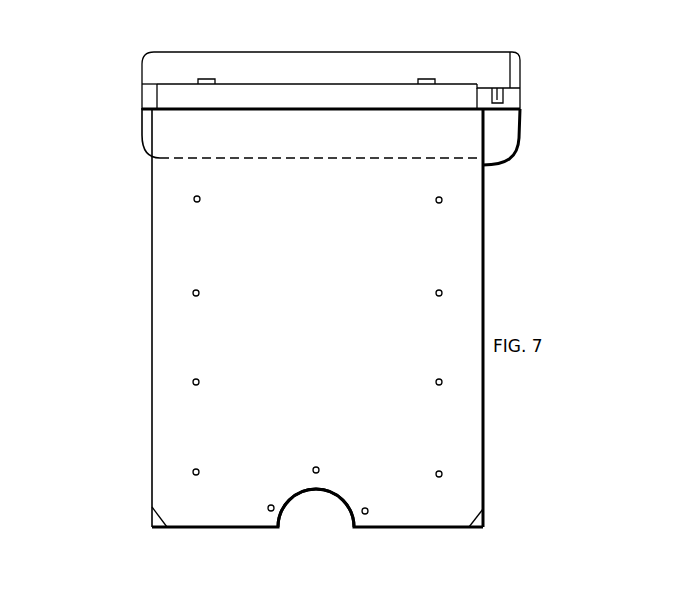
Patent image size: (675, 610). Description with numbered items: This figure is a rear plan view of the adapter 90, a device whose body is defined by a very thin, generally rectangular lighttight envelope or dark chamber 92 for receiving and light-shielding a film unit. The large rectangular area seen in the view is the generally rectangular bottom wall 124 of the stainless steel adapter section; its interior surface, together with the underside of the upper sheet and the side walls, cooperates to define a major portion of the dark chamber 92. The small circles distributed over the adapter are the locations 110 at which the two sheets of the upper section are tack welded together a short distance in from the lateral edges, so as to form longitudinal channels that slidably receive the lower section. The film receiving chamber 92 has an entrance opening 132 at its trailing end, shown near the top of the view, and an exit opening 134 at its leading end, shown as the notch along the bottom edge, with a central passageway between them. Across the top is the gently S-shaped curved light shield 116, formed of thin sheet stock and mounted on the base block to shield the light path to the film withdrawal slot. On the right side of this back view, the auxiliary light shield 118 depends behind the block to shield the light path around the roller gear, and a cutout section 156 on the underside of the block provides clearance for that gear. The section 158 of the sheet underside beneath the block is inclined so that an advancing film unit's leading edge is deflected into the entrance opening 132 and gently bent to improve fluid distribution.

The adapter 90 is at (128, 266).
The dark chamber 92 is at (140, 367).
The tack weld locations 110 is at (199, 291).
The light shield 116 is at (291, 68).
The auxiliary light shield 118 is at (517, 64).
The bottom wall 124 is at (328, 336).
The entrance opening 132 is at (183, 96).
The exit opening 134 is at (258, 535).
The cutout section 156 is at (497, 88).
The inclined surface section 158 is at (341, 100).